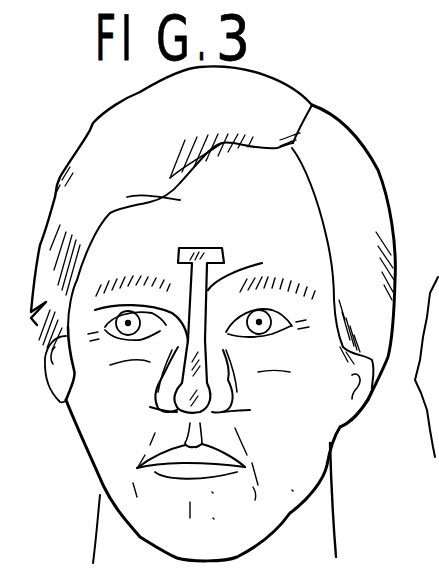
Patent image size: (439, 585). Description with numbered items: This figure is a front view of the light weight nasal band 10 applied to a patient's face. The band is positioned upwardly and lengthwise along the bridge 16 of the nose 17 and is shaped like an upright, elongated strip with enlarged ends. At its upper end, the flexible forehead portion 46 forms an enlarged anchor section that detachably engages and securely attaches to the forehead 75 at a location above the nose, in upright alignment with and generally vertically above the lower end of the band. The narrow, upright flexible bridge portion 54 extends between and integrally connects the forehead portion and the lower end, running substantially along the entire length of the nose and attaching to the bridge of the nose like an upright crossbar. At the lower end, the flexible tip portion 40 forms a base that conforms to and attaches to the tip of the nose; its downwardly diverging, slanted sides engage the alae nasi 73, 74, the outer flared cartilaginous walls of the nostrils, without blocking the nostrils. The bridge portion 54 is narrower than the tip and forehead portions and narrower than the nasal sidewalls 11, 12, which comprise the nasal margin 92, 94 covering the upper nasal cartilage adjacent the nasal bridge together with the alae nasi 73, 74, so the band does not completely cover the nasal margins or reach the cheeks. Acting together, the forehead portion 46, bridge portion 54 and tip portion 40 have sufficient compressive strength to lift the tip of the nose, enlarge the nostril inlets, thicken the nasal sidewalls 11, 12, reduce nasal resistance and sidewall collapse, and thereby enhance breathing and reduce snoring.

The nasal band 10 is at (163, 264).
The forehead portion 46 is at (199, 252).
The bridge portion 54 is at (208, 281).
The tip portion 40 is at (190, 413).
The forehead 75 is at (133, 197).
The bridge 16 is at (102, 310).
The nose 17 is at (220, 339).
The nasal margin 92 is at (190, 353).
The nasal margin 94 is at (220, 358).
The nasal sidewall 11 is at (166, 372).
The nasal sidewall 12 is at (233, 379).
The ala nasi 73 is at (160, 400).
The ala nasi 74 is at (232, 400).